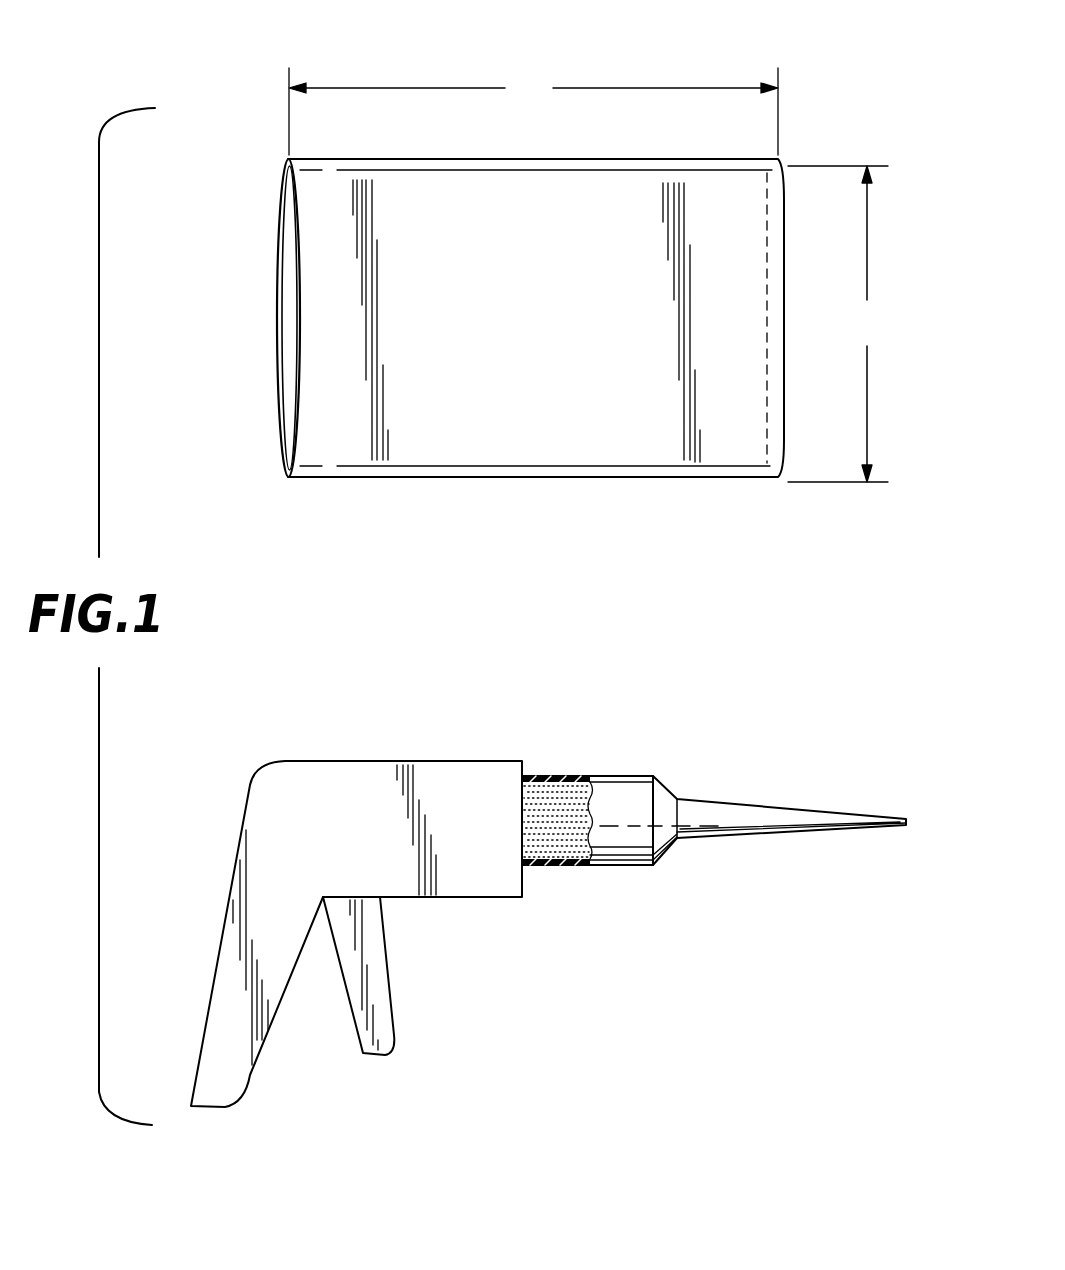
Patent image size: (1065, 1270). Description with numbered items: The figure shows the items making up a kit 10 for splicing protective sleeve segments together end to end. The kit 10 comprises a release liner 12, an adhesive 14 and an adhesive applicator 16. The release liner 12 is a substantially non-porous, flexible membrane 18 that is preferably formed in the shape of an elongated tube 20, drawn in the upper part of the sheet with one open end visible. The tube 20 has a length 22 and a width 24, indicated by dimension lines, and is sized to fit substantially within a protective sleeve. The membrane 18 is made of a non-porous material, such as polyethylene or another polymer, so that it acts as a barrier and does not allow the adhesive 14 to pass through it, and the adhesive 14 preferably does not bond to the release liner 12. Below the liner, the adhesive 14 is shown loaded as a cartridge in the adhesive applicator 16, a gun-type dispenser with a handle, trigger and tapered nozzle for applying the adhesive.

The kit 10 is at (817, 109).
The release liner 12 is at (585, 447).
The adhesive 14 is at (575, 808).
The adhesive applicator 16 is at (318, 806).
The flexible membrane 18 is at (528, 339).
The elongated tube 20 is at (290, 281).
The length 22 is at (533, 111).
The width 24 is at (838, 324).